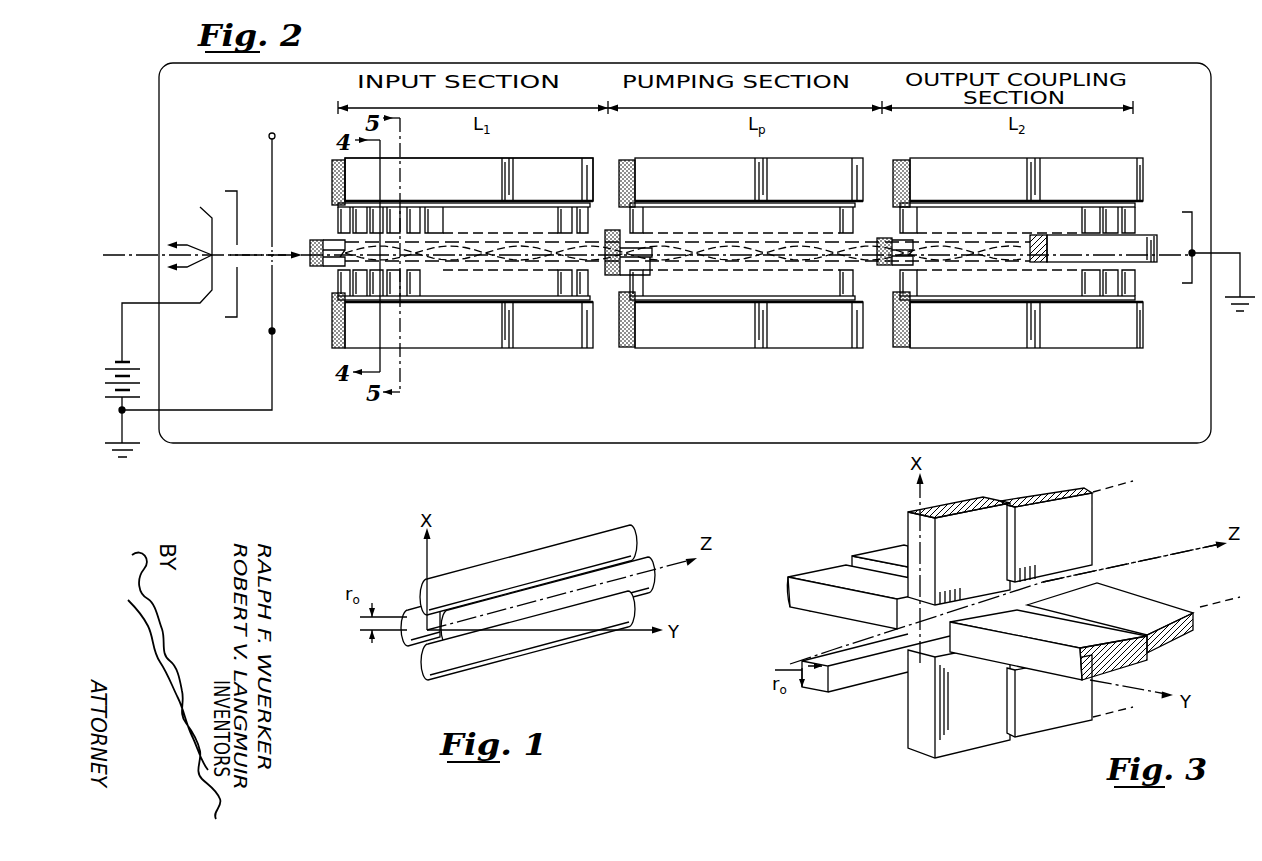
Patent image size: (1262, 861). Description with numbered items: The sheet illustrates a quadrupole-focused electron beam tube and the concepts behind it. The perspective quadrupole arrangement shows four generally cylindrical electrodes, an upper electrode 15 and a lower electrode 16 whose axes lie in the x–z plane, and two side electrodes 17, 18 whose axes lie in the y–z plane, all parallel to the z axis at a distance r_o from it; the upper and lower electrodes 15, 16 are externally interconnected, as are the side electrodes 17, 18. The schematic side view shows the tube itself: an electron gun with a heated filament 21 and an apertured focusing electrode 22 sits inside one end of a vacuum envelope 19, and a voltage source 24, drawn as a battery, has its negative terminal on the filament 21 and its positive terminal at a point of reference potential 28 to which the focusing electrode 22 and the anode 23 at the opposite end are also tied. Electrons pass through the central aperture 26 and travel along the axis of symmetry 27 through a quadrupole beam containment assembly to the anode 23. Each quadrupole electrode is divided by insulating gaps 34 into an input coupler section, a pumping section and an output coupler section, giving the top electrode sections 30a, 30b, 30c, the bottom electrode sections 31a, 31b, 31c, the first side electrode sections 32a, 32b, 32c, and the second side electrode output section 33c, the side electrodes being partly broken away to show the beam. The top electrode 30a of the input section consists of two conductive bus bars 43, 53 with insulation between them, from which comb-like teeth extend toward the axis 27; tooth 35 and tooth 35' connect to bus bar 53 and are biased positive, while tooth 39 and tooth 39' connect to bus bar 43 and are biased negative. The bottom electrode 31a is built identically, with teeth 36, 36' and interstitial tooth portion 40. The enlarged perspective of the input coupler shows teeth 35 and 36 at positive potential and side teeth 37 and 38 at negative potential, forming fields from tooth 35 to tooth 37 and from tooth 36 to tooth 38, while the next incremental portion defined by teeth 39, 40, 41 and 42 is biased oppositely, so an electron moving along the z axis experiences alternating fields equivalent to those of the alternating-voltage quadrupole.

In FIG. 1, the upper electrode 15 is at (607, 531).
In FIG. 1, the lower electrode 16 is at (455, 675).
In FIG. 1, the side electrode 17 is at (656, 580).
In FIG. 1, the side electrode 18 is at (408, 645).
In FIG. 2, the vacuum envelope 19 is at (1148, 63).
In FIG. 2, the heated filament 21 is at (205, 303).
In FIG. 2, the focusing electrode 22 is at (272, 182).
In FIG. 2, the anode 23 is at (1198, 285).
In FIG. 2, the voltage source 24 is at (135, 368).
In FIG. 2, the central aperture 26 is at (267, 263).
In FIG. 2, the axis of symmetry 27 is at (122, 257).
In FIG. 3, the axis of symmetry 27 is at (1191, 554).
In FIG. 2, the point of reference potential 28 is at (140, 425).
In FIG. 2, the top electrode of input section 30a is at (547, 150).
In FIG. 2, the top electrode of pumping section 30b is at (807, 157).
In FIG. 2, the top electrode of output section 30c is at (1088, 156).
In FIG. 2, the bottom electrode of input section 31a is at (540, 348).
In FIG. 2, the bottom electrode of pumping section 31b is at (848, 348).
In FIG. 2, the bottom electrode of output section 31c is at (1130, 347).
In FIG. 2, the first side electrode of input section 32a is at (316, 240).
In FIG. 2, the first side electrode of pumping section 32b is at (611, 230).
In FIG. 2, the first side electrode of output section 32c is at (882, 238).
In FIG. 2, the second side electrode of output section 33c is at (1150, 234).
In FIG. 2, the insulating gaps 34 is at (612, 340).
In FIG. 2, the tooth 35 is at (366, 203).
In FIG. 3, the tooth 35 is at (959, 536).
In FIG. 2, the tooth 35' is at (427, 204).
In FIG. 2, the tooth 36 is at (366, 300).
In FIG. 3, the tooth 36 is at (959, 709).
In FIG. 2, the tooth 36' is at (427, 300).
In FIG. 3, the side electrode tooth 37 is at (1143, 659).
In FIG. 3, the side electrode tooth 38 is at (806, 572).
In FIG. 2, the tooth 39 is at (398, 198).
In FIG. 3, the tooth 39 is at (1066, 517).
In FIG. 2, the tooth 39' is at (453, 198).
In FIG. 2, the interstitial tooth portion 40 is at (390, 297).
In FIG. 3, the interstitial tooth portion 40 is at (1070, 728).
In FIG. 3, the tooth 41 is at (1172, 604).
In FIG. 3, the tooth 42 is at (886, 533).
In FIG. 2, the bus bar 43 is at (333, 170).
In FIG. 2, the bus bar 53 is at (427, 158).